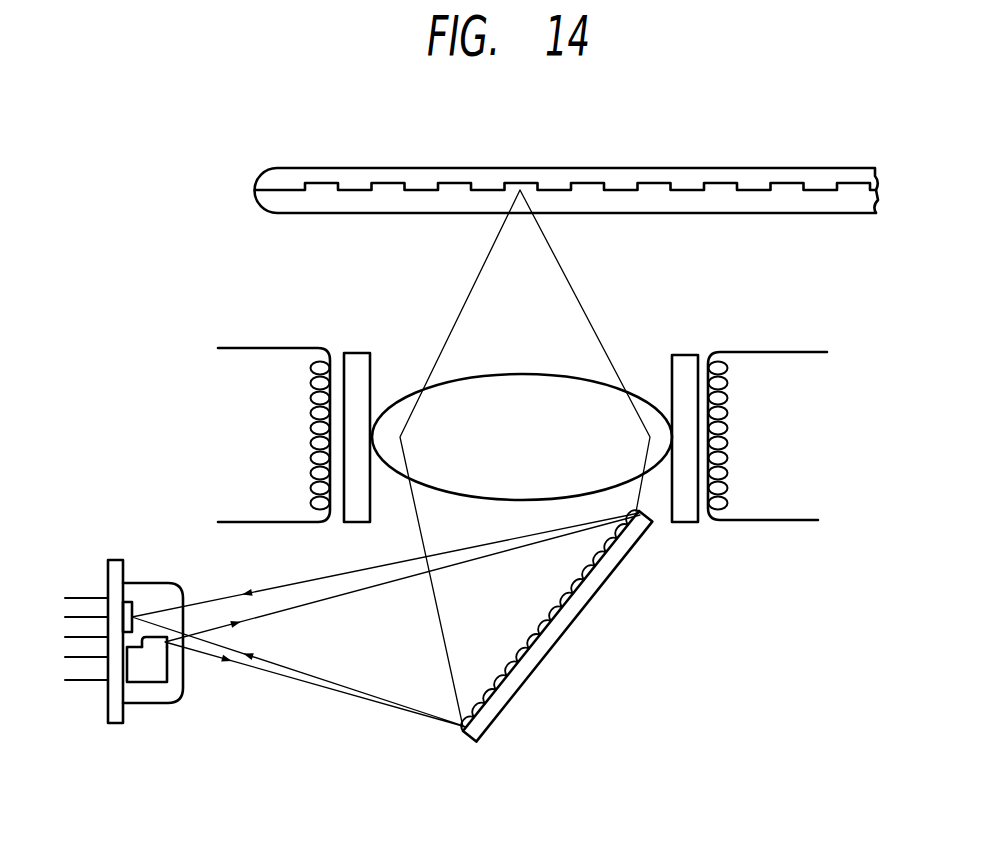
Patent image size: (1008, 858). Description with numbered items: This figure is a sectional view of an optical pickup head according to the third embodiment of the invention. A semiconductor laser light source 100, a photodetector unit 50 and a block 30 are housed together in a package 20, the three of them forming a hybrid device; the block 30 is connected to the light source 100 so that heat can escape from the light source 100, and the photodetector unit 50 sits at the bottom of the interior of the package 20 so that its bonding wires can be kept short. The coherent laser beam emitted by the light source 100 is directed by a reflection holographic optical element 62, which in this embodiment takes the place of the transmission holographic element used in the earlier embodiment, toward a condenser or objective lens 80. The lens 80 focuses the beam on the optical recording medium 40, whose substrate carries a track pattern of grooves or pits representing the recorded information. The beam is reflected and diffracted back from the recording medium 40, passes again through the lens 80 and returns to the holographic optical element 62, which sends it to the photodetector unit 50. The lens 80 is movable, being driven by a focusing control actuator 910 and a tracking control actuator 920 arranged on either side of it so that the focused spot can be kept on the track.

The optical recording medium 40 is at (737, 180).
The objective lens 80 is at (637, 393).
The tracking control actuator 920 is at (383, 527).
The focusing control actuator 910 is at (760, 527).
The reflection holographic optical element 62 is at (470, 752).
The package 20 is at (168, 706).
The photodetector unit 50 is at (125, 600).
The block 30 is at (145, 677).
The semiconductor laser light source 100 is at (167, 652).